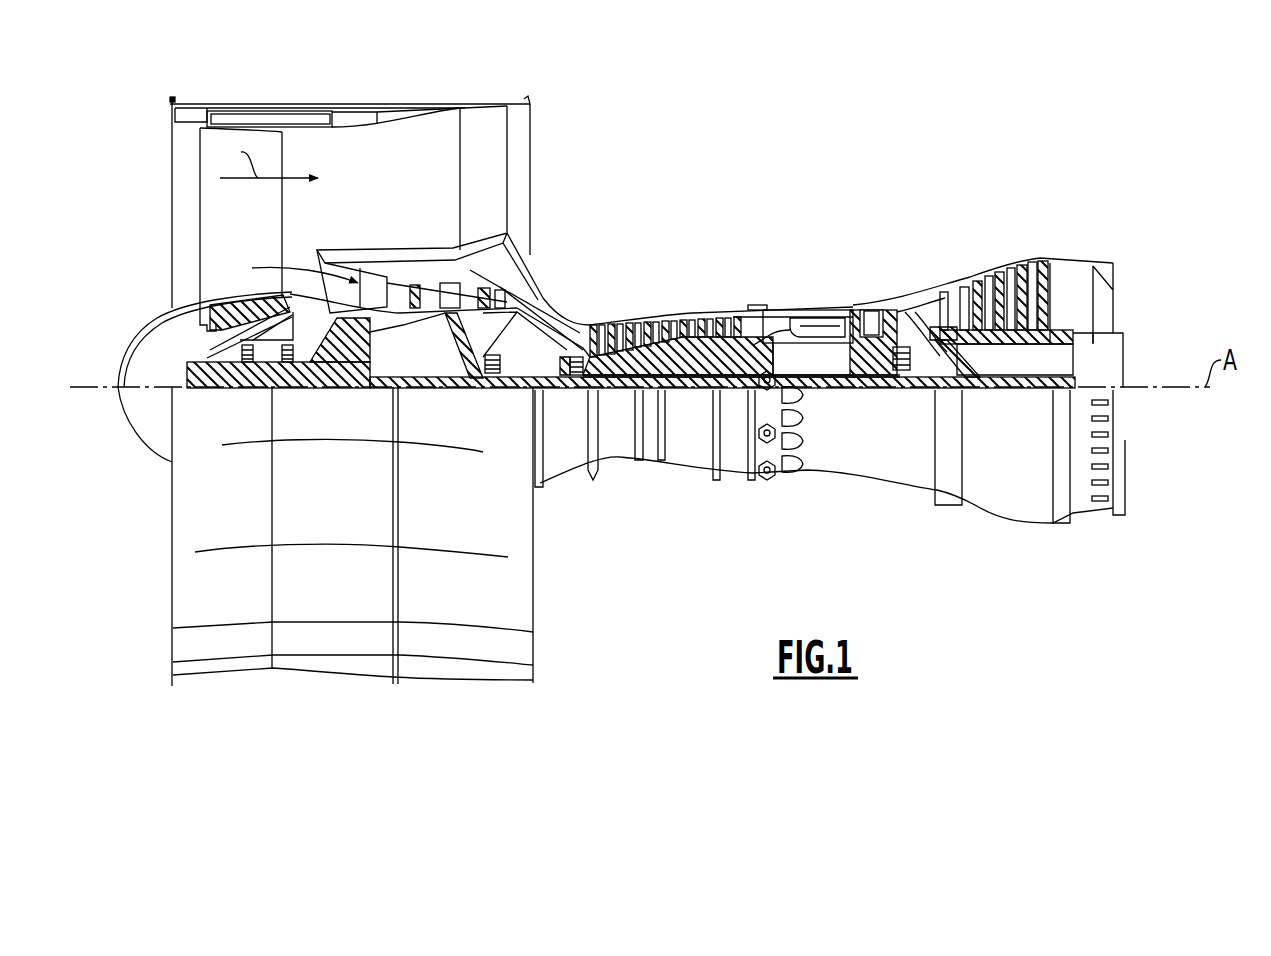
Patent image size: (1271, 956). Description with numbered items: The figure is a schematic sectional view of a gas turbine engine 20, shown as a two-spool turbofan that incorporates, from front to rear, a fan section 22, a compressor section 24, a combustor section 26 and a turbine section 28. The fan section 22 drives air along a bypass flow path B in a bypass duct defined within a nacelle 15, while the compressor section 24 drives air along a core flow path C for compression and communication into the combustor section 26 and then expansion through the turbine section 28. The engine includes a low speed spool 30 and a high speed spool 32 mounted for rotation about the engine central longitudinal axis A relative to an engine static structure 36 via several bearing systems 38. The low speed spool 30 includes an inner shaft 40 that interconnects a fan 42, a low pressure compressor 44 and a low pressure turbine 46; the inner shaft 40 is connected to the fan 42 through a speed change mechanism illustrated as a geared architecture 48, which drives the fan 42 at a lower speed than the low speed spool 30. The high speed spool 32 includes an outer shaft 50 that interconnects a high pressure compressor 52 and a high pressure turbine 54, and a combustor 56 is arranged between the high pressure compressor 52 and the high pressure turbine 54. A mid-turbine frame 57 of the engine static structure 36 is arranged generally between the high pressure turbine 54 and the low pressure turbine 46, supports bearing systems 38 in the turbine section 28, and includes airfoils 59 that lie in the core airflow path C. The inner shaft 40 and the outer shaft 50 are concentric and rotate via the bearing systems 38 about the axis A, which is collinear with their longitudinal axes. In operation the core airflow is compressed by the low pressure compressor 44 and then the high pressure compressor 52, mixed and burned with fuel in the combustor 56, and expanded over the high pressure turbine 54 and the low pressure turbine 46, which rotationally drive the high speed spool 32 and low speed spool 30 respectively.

The nacelle 15 is at (355, 103).
The gas turbine engine 20 is at (812, 155).
The fan section 22 is at (283, 95).
The compressor section 24 is at (585, 294).
The combustor section 26 is at (807, 285).
The turbine section 28 is at (953, 247).
The low speed spool 30 is at (692, 397).
The high speed spool 32 is at (728, 358).
The engine static structure 36 is at (732, 480).
The bearing systems 38 is at (493, 372).
The inner shaft 40 is at (553, 393).
The fan 42 is at (256, 236).
The low pressure compressor 44 is at (460, 298).
The low pressure turbine 46 is at (1003, 270).
The geared architecture 48 is at (360, 370).
The outer shaft 50 is at (818, 375).
The high pressure compressor 52 is at (667, 355).
The high pressure turbine 54 is at (873, 312).
The combustor 56 is at (806, 328).
The mid-turbine frame 57 is at (918, 295).
The airfoils 59 is at (913, 322).